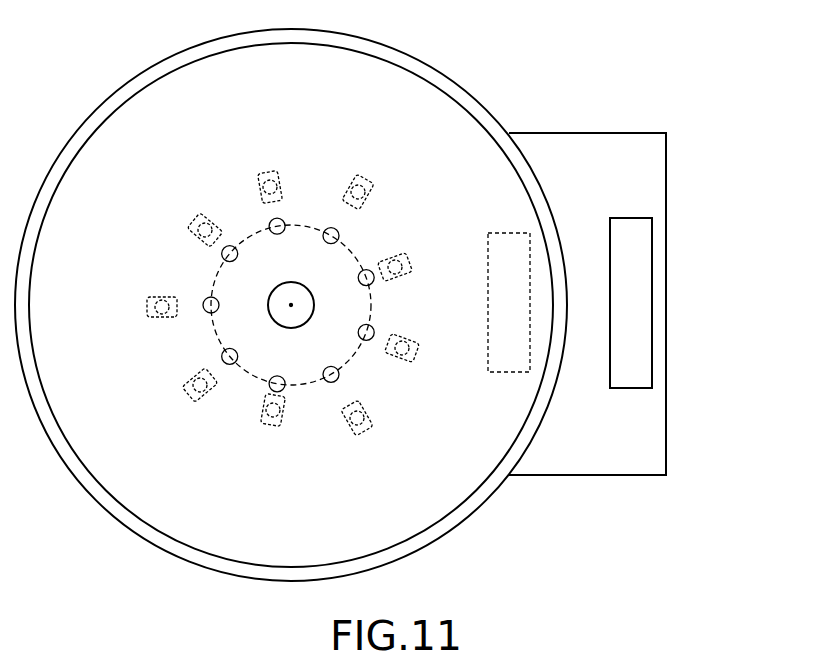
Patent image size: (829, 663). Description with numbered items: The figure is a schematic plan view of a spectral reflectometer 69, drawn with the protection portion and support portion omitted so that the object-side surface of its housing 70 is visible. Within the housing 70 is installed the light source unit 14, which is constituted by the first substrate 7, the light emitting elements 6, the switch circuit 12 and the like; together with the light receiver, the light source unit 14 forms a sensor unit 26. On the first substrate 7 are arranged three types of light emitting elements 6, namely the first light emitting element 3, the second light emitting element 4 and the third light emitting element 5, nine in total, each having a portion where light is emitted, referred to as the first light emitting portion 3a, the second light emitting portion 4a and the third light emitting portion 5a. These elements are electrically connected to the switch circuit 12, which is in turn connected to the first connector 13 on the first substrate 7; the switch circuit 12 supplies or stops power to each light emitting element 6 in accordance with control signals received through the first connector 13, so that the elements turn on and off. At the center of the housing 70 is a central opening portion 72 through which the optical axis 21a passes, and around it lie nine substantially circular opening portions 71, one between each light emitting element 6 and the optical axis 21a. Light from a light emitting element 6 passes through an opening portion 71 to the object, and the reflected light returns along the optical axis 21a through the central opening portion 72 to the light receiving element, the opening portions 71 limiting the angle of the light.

The spectral reflectometer 69 is at (673, 51).
The housing 70 is at (375, 97).
The opening portion 71 is at (222, 254).
The central opening portion 72 is at (287, 308).
The optical axis 21a is at (292, 307).
The first substrate 7 is at (645, 304).
The light source unit 14 is at (587, 304).
The sensor unit 26 is at (666, 158).
The first connector 13 is at (645, 266).
The switch circuit 12 is at (505, 363).
The first light emitting element 3 is at (264, 305).
The first light emitting portion 3a is at (368, 188).
The second light emitting element 4 is at (308, 277).
The second light emitting portion 4a is at (288, 175).
The third light emitting element 5 is at (316, 321).
The third light emitting portion 5a is at (213, 220).
The light emitting element 6 is at (286, 303).